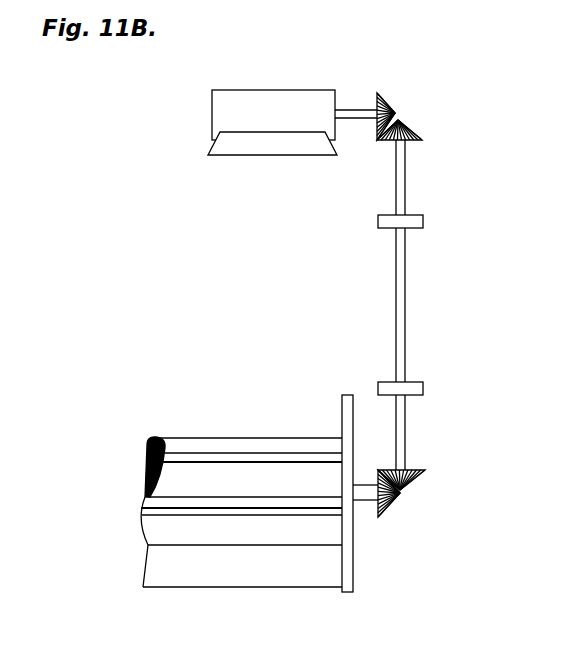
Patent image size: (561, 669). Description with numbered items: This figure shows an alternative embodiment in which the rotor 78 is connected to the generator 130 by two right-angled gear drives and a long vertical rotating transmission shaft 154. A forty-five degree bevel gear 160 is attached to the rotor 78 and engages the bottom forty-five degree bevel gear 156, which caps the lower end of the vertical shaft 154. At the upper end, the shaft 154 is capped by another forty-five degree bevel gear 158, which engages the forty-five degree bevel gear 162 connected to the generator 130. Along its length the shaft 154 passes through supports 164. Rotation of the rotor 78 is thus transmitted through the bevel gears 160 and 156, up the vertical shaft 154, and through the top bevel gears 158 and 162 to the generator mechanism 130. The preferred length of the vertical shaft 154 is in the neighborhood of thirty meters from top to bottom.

The generator 130 is at (289, 127).
The bevel gear 162 is at (387, 98).
The bevel gear 158 is at (417, 123).
The vertical shaft 154 is at (408, 317).
The bearing 164 is at (423, 220).
The rotor 78 is at (245, 425).
The bevel gear 156 is at (415, 485).
The bevel gear 160 is at (388, 508).